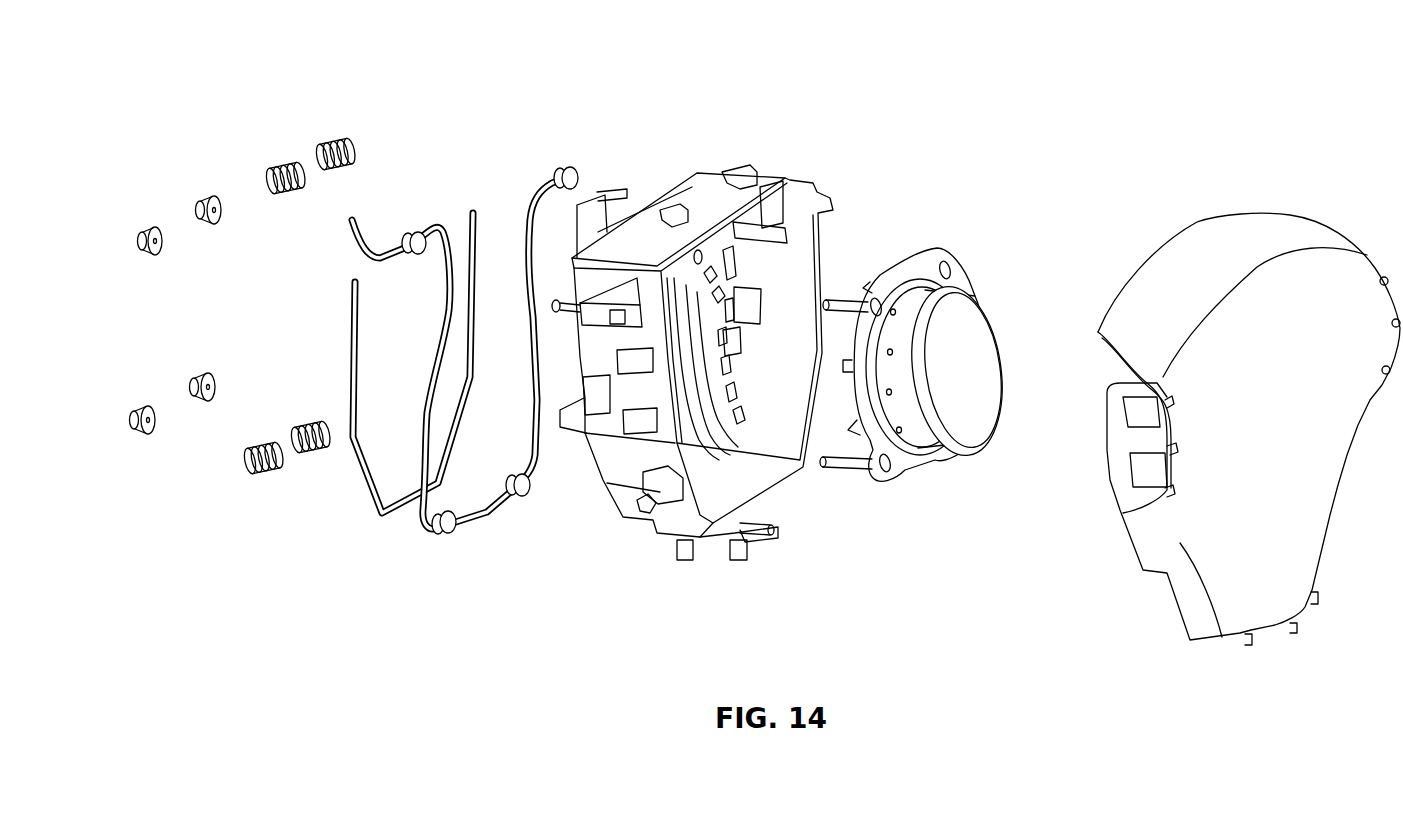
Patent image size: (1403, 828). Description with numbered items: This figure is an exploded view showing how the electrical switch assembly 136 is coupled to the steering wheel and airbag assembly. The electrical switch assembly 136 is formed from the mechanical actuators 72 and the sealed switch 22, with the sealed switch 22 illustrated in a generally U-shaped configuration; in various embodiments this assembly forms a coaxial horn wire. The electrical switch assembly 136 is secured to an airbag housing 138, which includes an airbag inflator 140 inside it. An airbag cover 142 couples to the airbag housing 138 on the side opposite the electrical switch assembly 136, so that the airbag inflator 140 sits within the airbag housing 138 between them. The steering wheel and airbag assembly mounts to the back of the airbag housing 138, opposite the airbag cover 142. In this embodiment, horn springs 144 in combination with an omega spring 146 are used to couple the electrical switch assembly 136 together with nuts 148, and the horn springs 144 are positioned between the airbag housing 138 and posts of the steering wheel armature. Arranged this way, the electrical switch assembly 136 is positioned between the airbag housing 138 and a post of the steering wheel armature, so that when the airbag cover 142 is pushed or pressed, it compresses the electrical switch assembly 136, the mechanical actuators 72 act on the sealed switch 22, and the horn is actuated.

The electrical switch assembly 136 is at (461, 622).
The airbag housing 138 is at (732, 168).
The airbag inflator 140 is at (975, 292).
The airbag cover 142 is at (1197, 222).
The horn springs 144 is at (337, 147).
The omega spring 146 is at (368, 470).
The nuts 148 is at (204, 204).
The sealed switch 22 is at (548, 190).
The mechanical actuators 72 is at (420, 232).